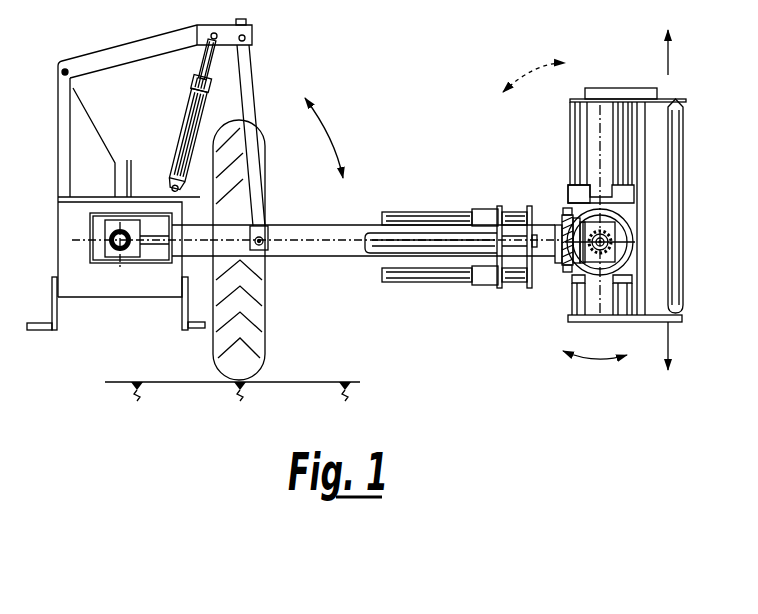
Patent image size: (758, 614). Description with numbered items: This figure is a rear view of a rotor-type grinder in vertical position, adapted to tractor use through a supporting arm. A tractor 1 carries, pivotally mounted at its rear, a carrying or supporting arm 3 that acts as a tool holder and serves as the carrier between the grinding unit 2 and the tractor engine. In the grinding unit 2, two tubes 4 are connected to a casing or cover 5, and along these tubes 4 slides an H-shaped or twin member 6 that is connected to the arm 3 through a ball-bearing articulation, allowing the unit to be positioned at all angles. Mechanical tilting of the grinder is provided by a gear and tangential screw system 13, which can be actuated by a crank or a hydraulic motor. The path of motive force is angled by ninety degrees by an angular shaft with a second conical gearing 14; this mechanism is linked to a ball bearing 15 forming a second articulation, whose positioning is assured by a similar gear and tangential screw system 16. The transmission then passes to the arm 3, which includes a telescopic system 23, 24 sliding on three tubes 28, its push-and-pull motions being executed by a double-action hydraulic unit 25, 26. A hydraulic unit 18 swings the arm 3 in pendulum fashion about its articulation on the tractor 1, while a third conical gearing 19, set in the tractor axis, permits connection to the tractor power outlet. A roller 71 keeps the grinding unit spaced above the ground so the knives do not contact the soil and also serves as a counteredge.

The tractor 1 is at (118, 302).
The grinding unit 2 is at (553, 320).
The carrying or supporting arm 3 is at (307, 252).
The tubes 4 is at (622, 142).
The casing or cover 5 is at (632, 90).
The H-shaped or twin member 6 is at (573, 195).
The gear and tangential screw system 13 is at (560, 215).
The second conical gearing 14 is at (612, 245).
The ball bearing 15 is at (556, 255).
The gear and tangential screw system 16 is at (566, 268).
The hydraulic unit 18 is at (193, 121).
The third conical gearing 19 is at (119, 252).
The telescopic system 23 is at (497, 286).
The telescopic system 24 is at (529, 288).
The double-action hydraulic unit 25 is at (377, 246).
The double-action hydraulic unit 26 is at (490, 208).
The tubes 28 is at (411, 216).
The roller 71 is at (684, 241).